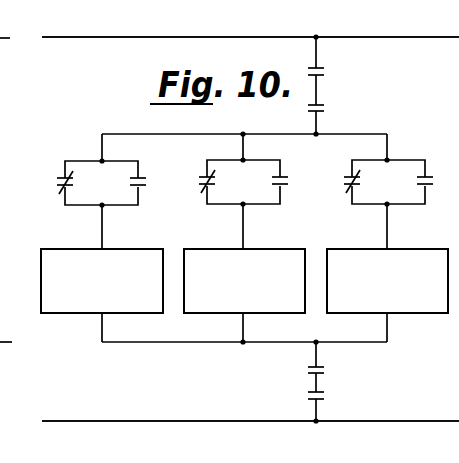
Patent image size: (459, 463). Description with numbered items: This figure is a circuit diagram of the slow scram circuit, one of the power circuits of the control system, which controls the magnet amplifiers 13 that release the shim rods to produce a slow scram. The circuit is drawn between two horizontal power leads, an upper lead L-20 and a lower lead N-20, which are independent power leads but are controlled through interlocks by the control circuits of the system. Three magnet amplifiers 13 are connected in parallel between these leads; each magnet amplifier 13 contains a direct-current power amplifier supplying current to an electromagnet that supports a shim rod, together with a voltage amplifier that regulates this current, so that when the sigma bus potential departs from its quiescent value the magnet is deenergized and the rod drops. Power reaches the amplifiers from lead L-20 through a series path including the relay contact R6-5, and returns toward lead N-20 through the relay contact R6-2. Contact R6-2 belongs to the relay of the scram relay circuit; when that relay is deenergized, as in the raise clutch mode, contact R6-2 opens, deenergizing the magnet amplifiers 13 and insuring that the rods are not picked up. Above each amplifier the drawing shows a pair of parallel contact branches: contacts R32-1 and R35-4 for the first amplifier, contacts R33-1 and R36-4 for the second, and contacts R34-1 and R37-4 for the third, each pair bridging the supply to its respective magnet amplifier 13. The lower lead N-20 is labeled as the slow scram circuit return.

The power lead L-20 is at (160, 38).
The relay contact R6-5 is at (320, 106).
The relay contact R32-1 is at (60, 188).
The relay contact R35-4 is at (141, 181).
The relay contact R33-1 is at (205, 187).
The relay contact R36-4 is at (347, 180).
The relay contact R34-1 is at (349, 187).
The relay contact R37-4 is at (421, 179).
The magnet amplifier 13 is at (126, 244).
The contact R6-2 is at (322, 369).
The power lead N-20 is at (243, 420).